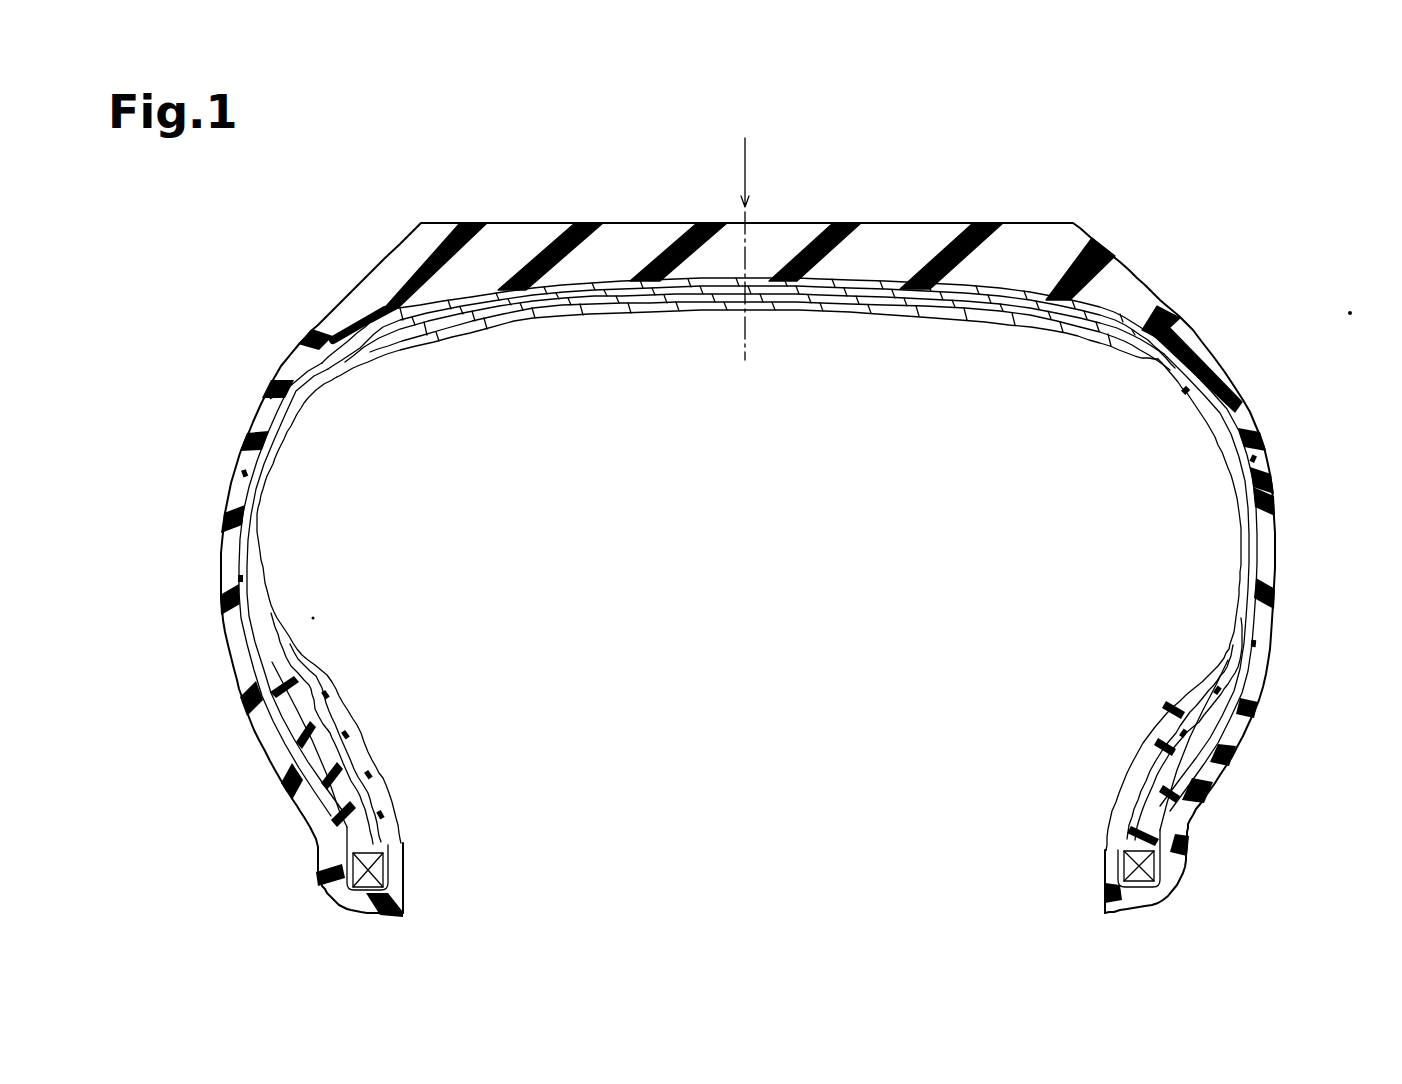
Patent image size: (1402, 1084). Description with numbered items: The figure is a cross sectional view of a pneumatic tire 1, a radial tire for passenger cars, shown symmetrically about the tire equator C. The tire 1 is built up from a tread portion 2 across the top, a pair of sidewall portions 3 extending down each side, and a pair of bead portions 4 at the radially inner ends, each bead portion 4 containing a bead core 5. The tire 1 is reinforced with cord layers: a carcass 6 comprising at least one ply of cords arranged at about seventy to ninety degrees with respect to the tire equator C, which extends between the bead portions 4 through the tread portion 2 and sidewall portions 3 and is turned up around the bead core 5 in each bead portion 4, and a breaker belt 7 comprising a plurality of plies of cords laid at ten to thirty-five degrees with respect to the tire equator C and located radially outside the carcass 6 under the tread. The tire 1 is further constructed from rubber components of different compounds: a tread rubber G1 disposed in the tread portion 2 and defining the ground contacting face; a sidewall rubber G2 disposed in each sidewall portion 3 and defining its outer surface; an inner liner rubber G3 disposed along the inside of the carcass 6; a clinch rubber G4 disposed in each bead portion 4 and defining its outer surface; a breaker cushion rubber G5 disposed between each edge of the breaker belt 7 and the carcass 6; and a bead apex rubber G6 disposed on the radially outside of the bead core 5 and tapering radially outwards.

The tire 1 is at (1151, 225).
The tread portion 2 is at (743, 214).
The sidewall portion 3 is at (1299, 510).
The bead portion 4 is at (300, 848).
The bead core 5 is at (382, 872).
The carcass 6 is at (937, 305).
The breaker belt 7 is at (620, 270).
The tire equator C is at (745, 304).
The tread rubber G1 is at (925, 222).
The sidewall rubber G2 is at (240, 468).
The inner liner rubber G3 is at (797, 305).
The clinch rubber G4 is at (315, 812).
The breaker cushion rubber G5 is at (362, 345).
The bead apex rubber G6 is at (315, 755).